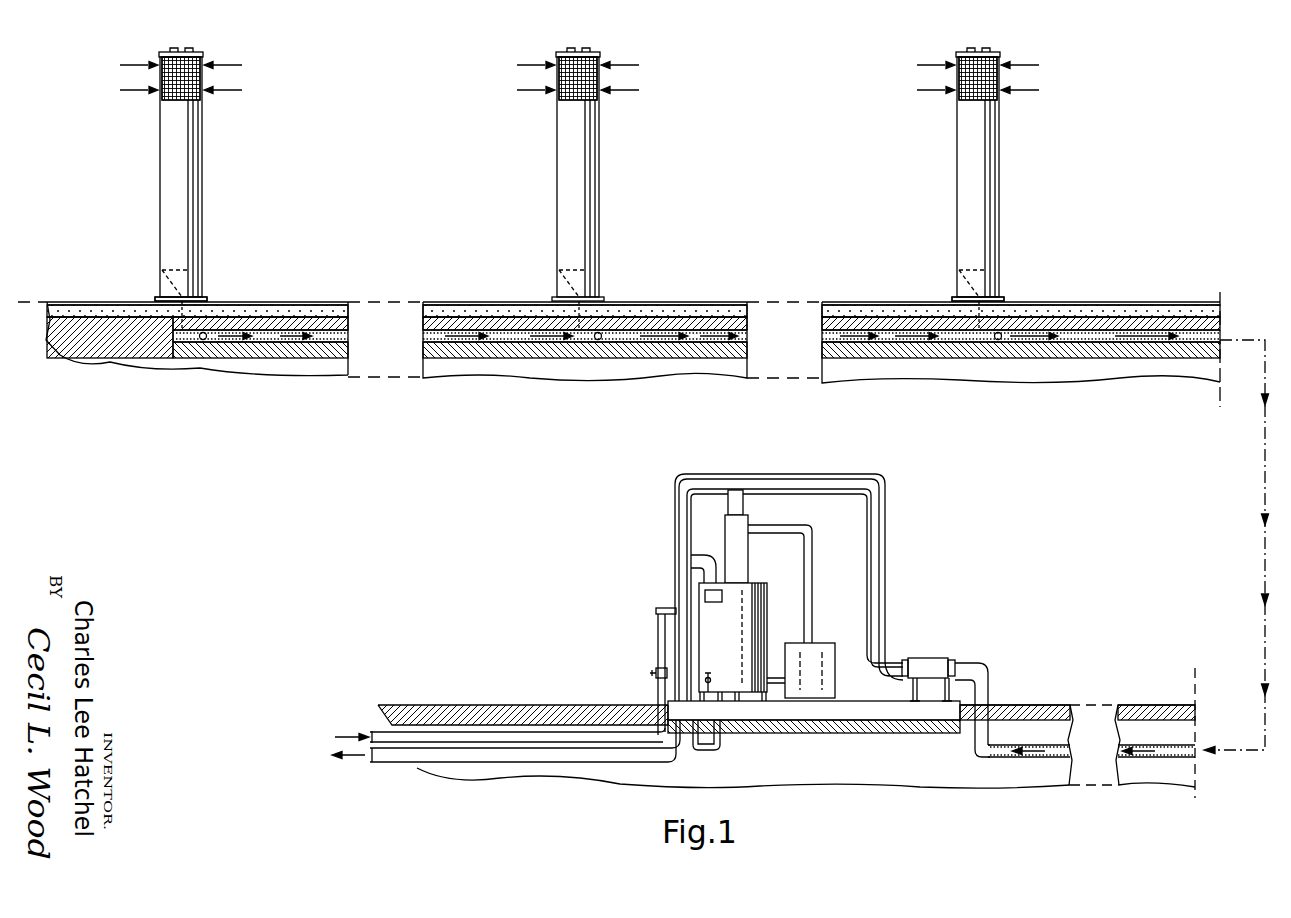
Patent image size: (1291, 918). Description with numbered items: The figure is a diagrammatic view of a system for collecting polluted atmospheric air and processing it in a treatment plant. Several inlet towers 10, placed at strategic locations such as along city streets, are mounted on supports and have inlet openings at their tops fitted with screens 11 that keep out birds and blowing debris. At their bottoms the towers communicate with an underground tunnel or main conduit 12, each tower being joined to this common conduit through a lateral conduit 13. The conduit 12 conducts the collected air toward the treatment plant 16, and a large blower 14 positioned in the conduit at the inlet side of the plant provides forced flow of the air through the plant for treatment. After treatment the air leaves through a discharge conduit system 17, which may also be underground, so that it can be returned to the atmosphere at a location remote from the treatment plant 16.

The inlet tower 10 is at (168, 167).
The screen 11 is at (163, 93).
The underground conduit 12 is at (497, 337).
The lateral conduit 13 is at (205, 340).
The blower 14 is at (926, 660).
The treatment plant 16 is at (707, 535).
The discharge conduit system 17 is at (528, 745).